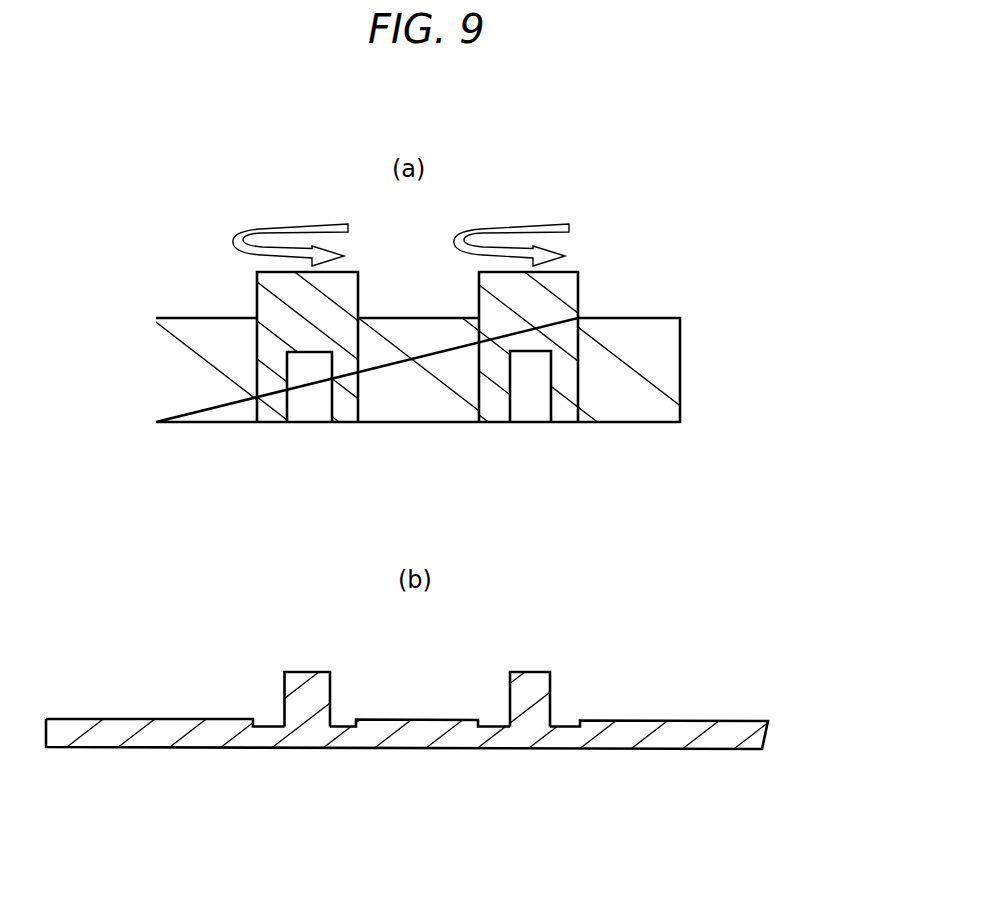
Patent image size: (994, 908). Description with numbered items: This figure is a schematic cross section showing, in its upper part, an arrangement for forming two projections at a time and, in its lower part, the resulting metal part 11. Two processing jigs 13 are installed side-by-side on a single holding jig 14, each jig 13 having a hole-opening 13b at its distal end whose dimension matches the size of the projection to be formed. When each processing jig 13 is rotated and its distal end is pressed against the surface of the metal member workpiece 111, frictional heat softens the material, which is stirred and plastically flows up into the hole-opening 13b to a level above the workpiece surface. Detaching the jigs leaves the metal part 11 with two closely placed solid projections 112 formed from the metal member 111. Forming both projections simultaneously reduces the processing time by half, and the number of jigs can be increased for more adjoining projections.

The metal part 11 is at (448, 685).
The metal member workpiece 111 is at (670, 728).
The projection 112 is at (517, 687).
The processing jig 13 is at (273, 284).
The hole-opening 13b is at (527, 415).
The holding jig 14 is at (672, 378).